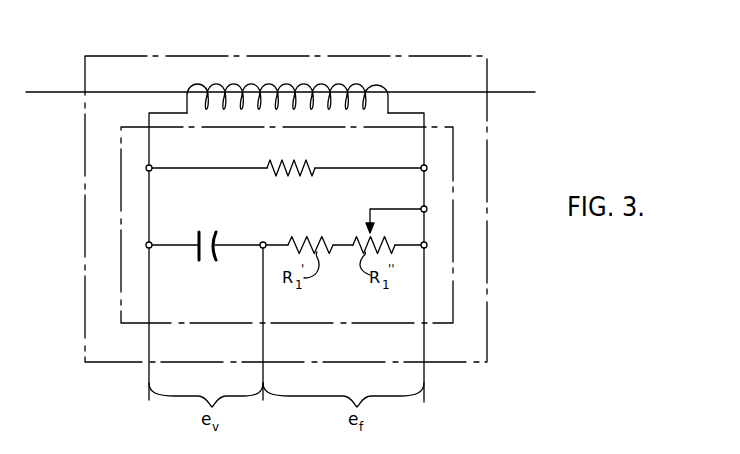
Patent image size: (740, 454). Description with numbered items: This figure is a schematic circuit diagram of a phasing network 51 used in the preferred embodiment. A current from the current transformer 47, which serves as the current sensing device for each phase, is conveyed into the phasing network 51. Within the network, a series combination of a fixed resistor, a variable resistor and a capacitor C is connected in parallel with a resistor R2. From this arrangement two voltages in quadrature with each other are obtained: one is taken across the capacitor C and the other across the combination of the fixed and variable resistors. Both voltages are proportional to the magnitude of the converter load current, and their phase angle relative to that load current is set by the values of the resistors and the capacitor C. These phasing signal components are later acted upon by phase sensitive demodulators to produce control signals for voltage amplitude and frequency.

The current transformer 47 is at (382, 84).
The phasing network 51 is at (487, 168).
The resistor R2 is at (281, 177).
The capacitor C is at (194, 259).